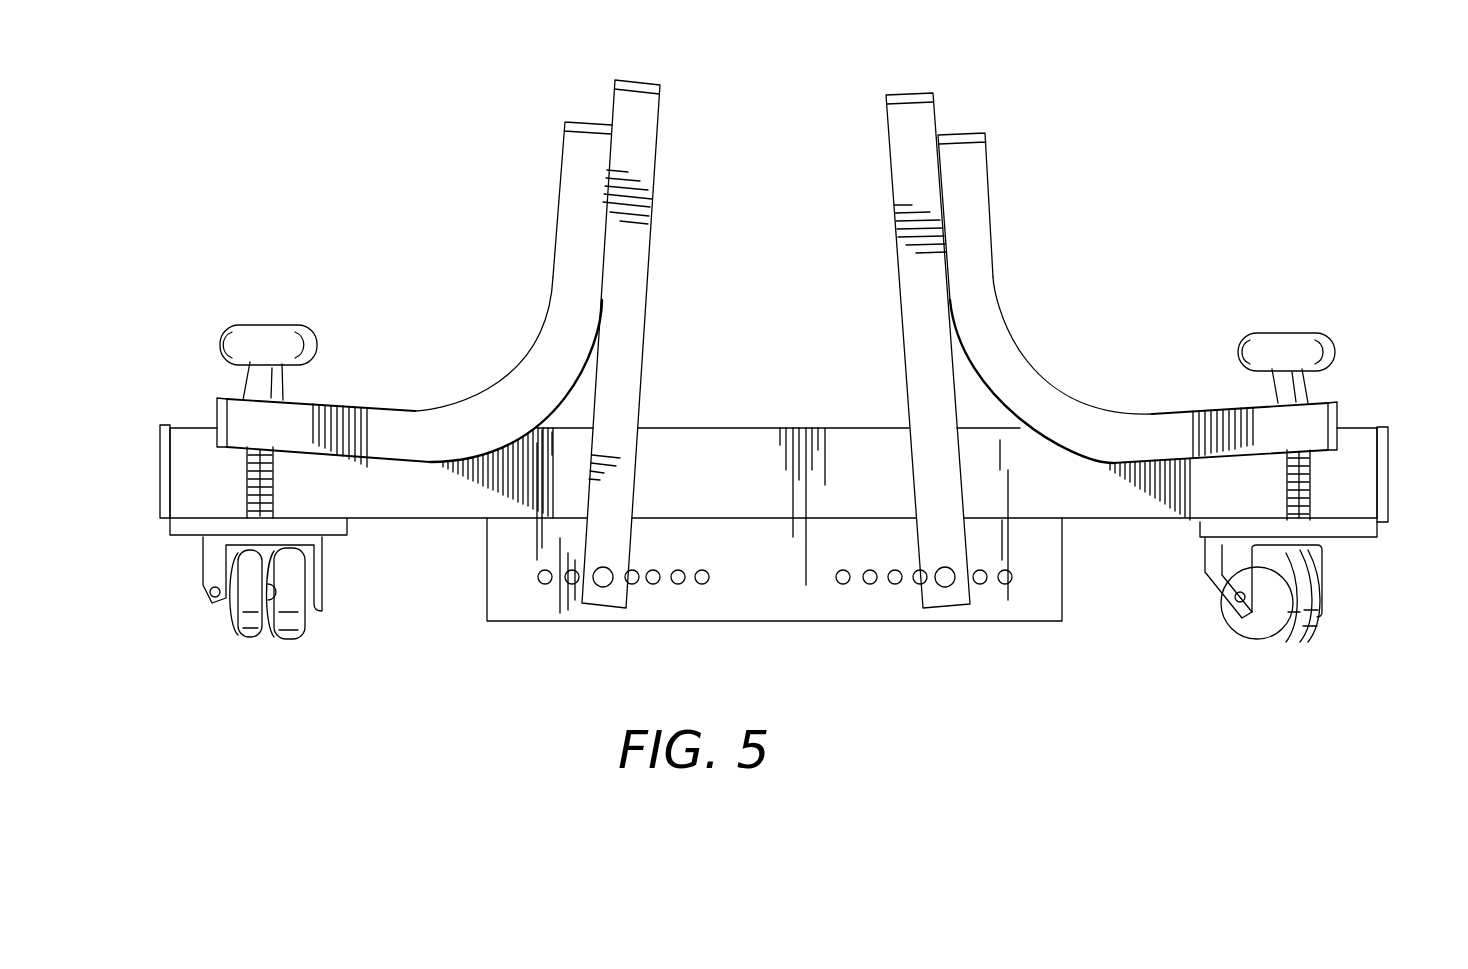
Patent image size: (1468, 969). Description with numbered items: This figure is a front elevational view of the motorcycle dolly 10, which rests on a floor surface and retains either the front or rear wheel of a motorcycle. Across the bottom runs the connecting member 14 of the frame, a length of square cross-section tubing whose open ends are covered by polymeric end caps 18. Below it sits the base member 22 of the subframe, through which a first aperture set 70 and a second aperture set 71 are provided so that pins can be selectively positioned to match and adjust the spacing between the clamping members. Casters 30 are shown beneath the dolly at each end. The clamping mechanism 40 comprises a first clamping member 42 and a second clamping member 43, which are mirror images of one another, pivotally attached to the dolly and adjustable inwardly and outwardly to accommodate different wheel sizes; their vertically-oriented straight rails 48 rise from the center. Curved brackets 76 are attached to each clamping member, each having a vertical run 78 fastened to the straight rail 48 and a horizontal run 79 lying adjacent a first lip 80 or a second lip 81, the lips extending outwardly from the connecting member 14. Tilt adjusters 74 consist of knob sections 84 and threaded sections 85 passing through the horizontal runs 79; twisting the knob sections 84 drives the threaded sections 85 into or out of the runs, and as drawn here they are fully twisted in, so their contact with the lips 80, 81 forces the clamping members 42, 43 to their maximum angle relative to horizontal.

The motorcycle dolly 10 is at (378, 166).
The connecting member 14 is at (723, 437).
The end caps 18 is at (162, 470).
The base member 22 is at (752, 608).
The caster wheel 30 is at (302, 618).
The clamping mechanism 40 is at (738, 124).
The first clamping member 42 is at (888, 268).
The second clamping member 43 is at (652, 290).
The vertically-oriented straight rail 48 is at (627, 365).
The first aperture set 70 is at (881, 595).
The second aperture set 71 is at (657, 593).
The tilt adjusters 74 is at (802, 382).
The brackets 76 is at (513, 380).
The vertical runs 78 is at (568, 228).
The horizontal runs 79 is at (388, 422).
The first lip 80 is at (1348, 532).
The second lip 81 is at (193, 528).
The knob sections 84 is at (258, 342).
The threaded sections 85 is at (275, 478).